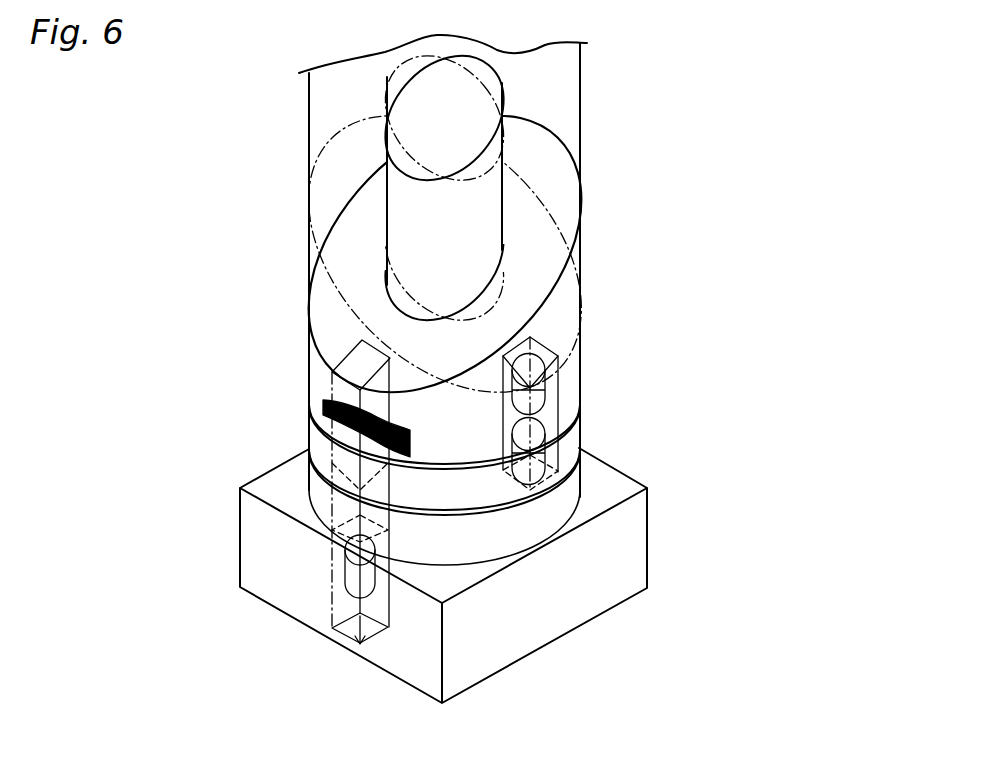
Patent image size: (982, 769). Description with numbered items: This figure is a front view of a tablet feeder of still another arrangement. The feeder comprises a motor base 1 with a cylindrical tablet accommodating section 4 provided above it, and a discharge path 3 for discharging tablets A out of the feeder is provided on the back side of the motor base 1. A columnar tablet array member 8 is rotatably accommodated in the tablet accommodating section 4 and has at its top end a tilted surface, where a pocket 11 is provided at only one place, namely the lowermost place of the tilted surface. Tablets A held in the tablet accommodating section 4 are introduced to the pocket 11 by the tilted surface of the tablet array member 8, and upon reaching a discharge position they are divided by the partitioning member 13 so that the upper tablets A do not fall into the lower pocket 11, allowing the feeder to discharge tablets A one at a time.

The motor base 1 is at (633, 538).
The discharge path 3 is at (332, 576).
The tablet accommodating section 4 is at (328, 103).
The tablet array member 8 is at (565, 302).
The pocket 11 is at (353, 357).
The partitioning member 13 is at (325, 403).
The tablets A is at (369, 585).